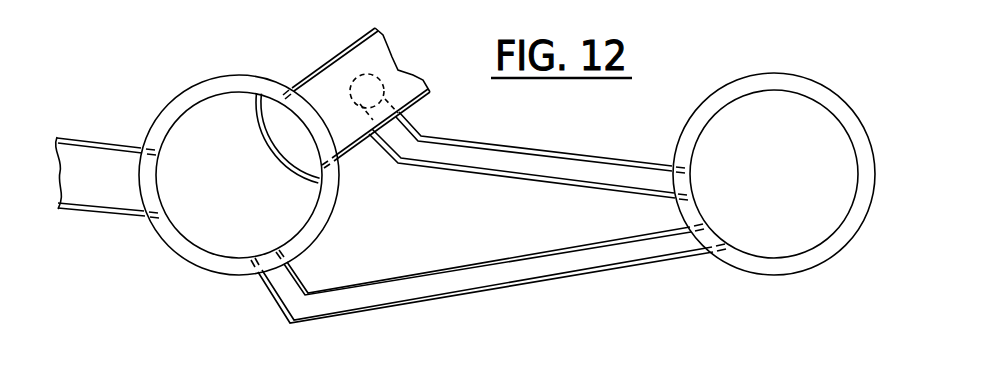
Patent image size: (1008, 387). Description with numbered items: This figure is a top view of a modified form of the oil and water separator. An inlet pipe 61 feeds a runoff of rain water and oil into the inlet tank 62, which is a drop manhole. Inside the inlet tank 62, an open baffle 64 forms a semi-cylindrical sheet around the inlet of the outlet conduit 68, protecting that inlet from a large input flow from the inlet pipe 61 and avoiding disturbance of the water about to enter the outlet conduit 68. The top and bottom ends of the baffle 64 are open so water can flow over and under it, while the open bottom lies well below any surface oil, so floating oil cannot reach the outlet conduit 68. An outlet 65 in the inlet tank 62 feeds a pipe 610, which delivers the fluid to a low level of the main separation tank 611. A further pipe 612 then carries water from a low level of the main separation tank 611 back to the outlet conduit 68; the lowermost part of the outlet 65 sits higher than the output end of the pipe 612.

The inlet pipe 61 is at (97, 197).
The inlet tank 62 is at (185, 122).
The open baffle 64 is at (271, 156).
The outlet 65 is at (273, 253).
The outlet conduit 68 is at (338, 75).
The pipe 610 is at (374, 287).
The main separation tank 611 is at (807, 107).
The pipe 612 is at (555, 163).